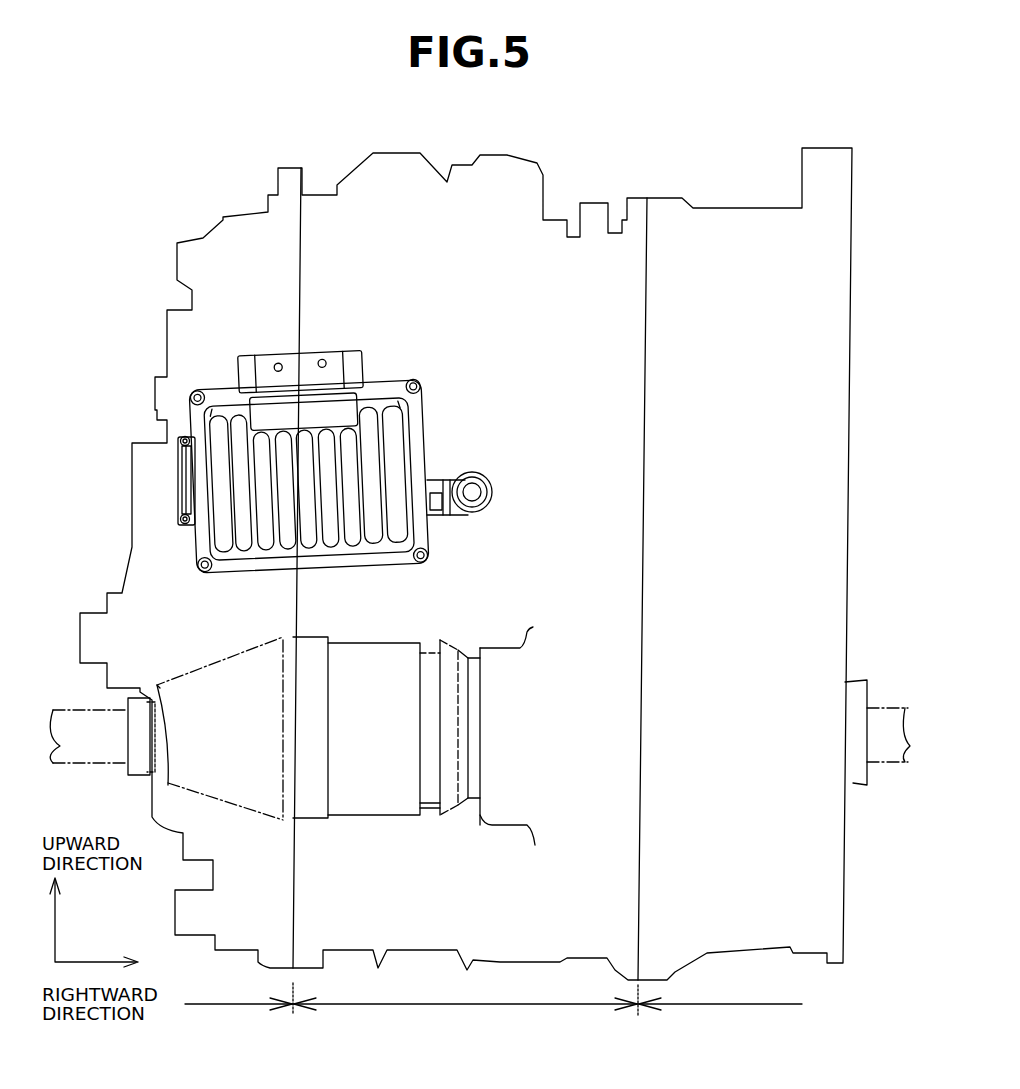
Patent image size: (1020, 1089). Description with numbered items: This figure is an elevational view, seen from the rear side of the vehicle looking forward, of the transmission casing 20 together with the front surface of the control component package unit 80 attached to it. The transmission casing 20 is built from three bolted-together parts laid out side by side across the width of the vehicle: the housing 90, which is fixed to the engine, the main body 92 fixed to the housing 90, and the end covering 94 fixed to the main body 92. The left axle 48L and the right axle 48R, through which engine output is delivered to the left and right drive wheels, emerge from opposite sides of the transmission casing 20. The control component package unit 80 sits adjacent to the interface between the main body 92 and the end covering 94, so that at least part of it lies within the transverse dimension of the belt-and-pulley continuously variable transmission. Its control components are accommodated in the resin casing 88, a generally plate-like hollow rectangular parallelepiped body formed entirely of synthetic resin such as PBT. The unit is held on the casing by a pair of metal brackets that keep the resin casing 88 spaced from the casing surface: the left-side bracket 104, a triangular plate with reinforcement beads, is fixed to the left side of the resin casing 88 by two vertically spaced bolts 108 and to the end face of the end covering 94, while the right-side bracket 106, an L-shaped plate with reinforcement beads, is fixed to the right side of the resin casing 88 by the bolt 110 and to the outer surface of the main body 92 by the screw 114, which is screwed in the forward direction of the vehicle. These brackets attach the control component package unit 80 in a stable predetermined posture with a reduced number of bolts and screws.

The transmission casing 20 is at (218, 156).
The control component package unit 80 is at (316, 453).
The resin casing 88 is at (338, 560).
The left-side bracket 104 is at (178, 478).
The bolts 108 is at (180, 441).
The right-side bracket 106 is at (456, 510).
The bolt 110 is at (434, 488).
The screw 114 is at (478, 491).
The left axle 48L is at (82, 765).
The right axle 48R is at (886, 764).
The end covering 94 is at (250, 1008).
The main body 92 is at (477, 1009).
The housing 90 is at (720, 1019).